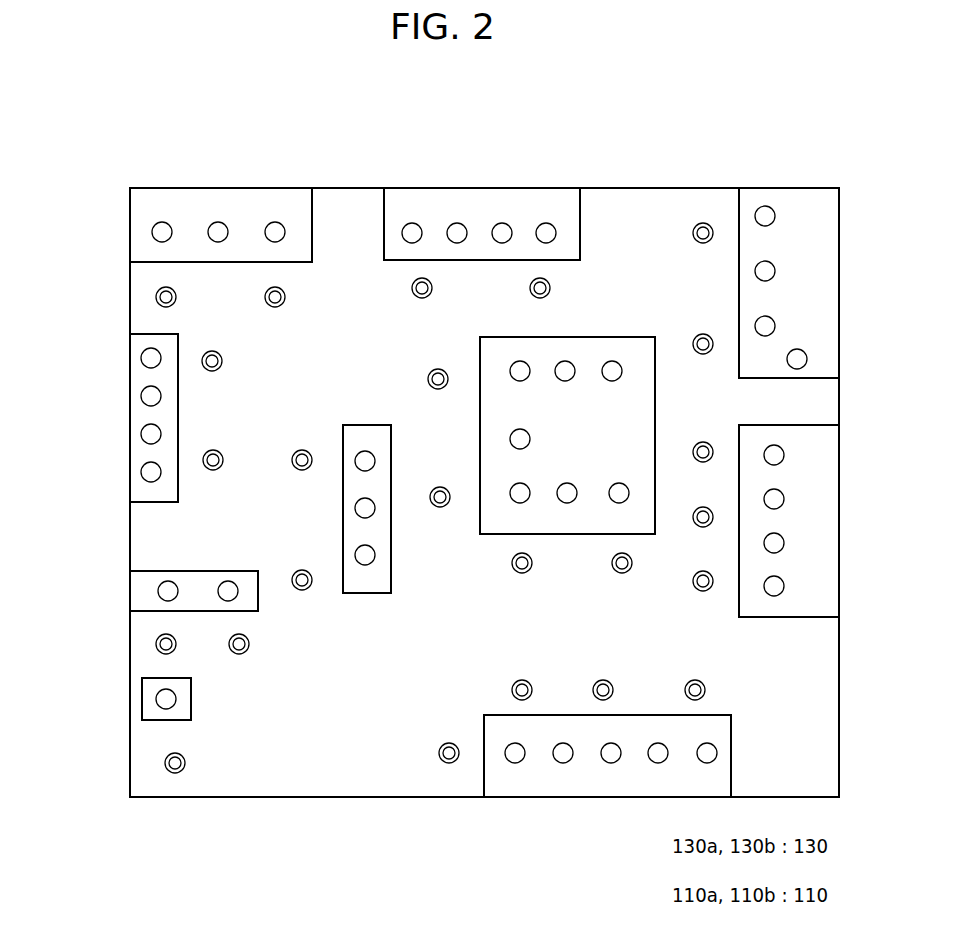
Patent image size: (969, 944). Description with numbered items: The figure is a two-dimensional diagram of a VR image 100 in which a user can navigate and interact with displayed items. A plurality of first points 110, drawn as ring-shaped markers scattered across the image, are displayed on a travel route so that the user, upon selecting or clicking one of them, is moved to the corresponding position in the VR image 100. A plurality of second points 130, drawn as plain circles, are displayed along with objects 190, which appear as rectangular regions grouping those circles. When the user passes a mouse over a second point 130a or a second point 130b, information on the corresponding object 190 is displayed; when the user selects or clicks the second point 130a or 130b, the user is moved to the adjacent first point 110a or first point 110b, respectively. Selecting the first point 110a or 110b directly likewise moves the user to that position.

The VR image 100 is at (148, 158).
The first points 110 is at (171, 773).
The first point 110a is at (157, 647).
The first point 110b is at (156, 299).
The second points 130 is at (605, 792).
The second point 130a is at (158, 592).
The second point 130b is at (152, 233).
The objects 190 is at (515, 763).